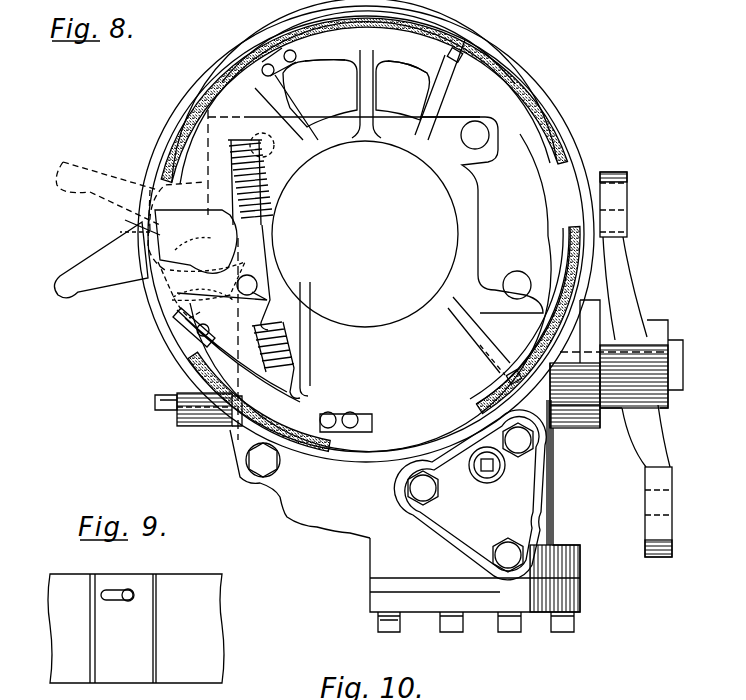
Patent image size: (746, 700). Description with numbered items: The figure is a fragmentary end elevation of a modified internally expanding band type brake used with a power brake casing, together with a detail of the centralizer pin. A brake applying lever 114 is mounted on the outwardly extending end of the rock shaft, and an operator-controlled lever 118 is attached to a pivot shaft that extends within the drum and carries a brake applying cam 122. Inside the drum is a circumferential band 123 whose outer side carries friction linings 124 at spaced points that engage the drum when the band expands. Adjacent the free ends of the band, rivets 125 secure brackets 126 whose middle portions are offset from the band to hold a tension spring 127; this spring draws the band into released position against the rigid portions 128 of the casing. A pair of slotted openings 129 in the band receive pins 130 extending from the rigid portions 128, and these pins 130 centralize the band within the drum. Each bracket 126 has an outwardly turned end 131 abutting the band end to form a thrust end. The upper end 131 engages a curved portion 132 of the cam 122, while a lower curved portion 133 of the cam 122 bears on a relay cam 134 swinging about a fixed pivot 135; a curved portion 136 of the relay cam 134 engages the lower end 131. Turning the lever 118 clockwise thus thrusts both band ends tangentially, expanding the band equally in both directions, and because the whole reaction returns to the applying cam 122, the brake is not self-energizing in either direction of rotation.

In FIG. 8, the brake applying lever 114 is at (644, 340).
In FIG. 8, the lever 118 is at (70, 278).
In FIG. 8, the brake applying cam 122 is at (172, 290).
In FIG. 8, the circumferential band 123 is at (312, 398).
In FIG. 8, the friction linings 124 is at (532, 110).
In FIG. 9, the friction linings 124 is at (67, 637).
In FIG. 8, the rivets 125 is at (330, 414).
In FIG. 8, the brackets 126 is at (270, 382).
In FIG. 8, the tension spring 127 is at (238, 262).
In FIG. 8, the rigid portions 128 is at (388, 48).
In FIG. 9, the slotted openings 129 is at (118, 590).
In FIG. 8, the pins 130 is at (458, 53).
In FIG. 9, the pins 130 is at (133, 592).
In FIG. 8, the outwardly turned end 131 is at (190, 316).
In FIG. 8, the curved portion 132 is at (179, 224).
In FIG. 8, the curved portion 133 is at (175, 300).
In FIG. 8, the relay cam 134 is at (252, 272).
In FIG. 8, the fixed pivot 135 is at (254, 288).
In FIG. 8, the curved portion 136 is at (200, 332).